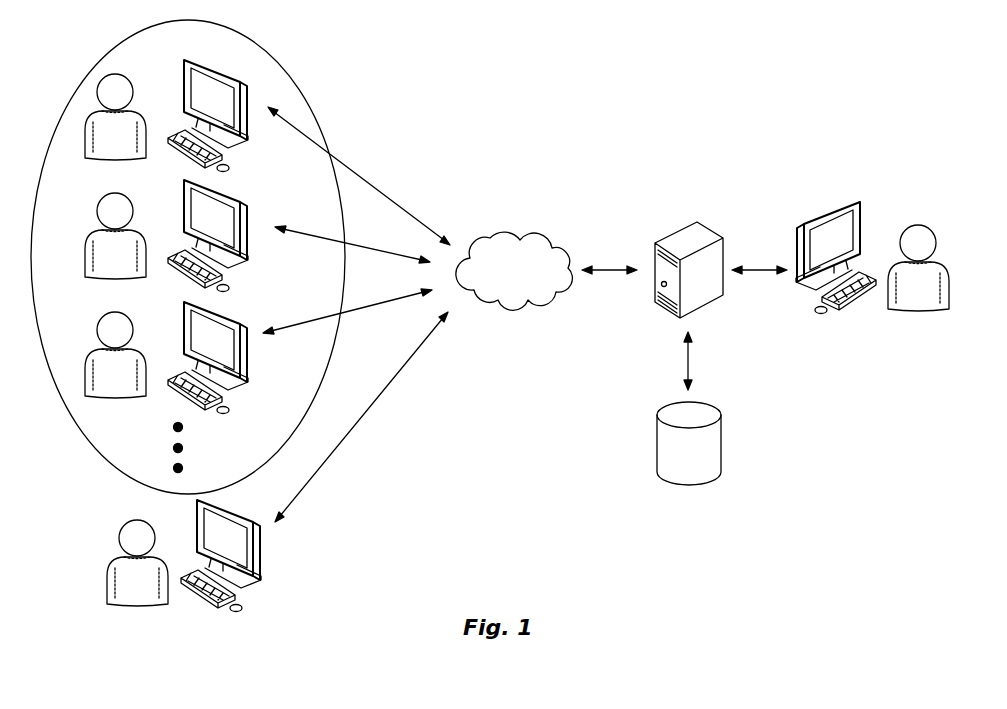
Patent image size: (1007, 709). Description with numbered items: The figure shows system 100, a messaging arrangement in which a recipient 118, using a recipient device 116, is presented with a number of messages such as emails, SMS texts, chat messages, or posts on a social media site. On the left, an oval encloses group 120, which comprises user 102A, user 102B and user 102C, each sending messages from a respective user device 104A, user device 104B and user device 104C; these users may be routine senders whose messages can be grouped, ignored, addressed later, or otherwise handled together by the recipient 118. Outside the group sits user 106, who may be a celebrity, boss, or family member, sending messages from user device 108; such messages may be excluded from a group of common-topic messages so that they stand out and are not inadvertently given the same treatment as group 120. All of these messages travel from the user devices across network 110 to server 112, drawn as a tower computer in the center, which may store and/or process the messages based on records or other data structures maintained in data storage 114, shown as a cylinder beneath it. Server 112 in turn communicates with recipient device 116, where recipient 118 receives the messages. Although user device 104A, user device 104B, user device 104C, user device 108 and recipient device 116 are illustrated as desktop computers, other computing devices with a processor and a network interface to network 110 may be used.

The system 100 is at (854, 72).
The user 102A is at (127, 73).
The user 102B is at (127, 191).
The user 102C is at (127, 312).
The user device 104A is at (237, 82).
The user device 104B is at (238, 200).
The user device 104C is at (238, 322).
The user 106 is at (120, 553).
The user device 108 is at (258, 560).
The network 110 is at (530, 237).
The server 112 is at (705, 228).
The data storage 114 is at (718, 438).
The recipient device 116 is at (845, 200).
The recipient 118 is at (900, 310).
The group 120 is at (313, 108).